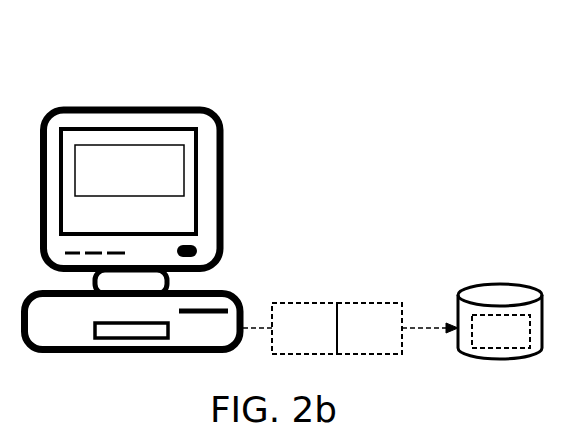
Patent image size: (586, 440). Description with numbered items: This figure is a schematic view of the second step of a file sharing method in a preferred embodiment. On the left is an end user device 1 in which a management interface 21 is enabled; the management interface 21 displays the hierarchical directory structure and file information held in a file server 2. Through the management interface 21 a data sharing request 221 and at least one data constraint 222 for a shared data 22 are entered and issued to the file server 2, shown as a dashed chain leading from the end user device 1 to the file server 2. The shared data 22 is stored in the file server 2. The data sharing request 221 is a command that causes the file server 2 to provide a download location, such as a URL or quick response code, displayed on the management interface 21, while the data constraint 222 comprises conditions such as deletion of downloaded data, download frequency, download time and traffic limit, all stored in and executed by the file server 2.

The end user device 1 is at (200, 76).
The management interface 21 is at (129, 170).
The data sharing request 221 is at (304, 328).
The data constraint 222 is at (369, 328).
The file server 2 is at (514, 289).
The shared data 22 is at (501, 331).